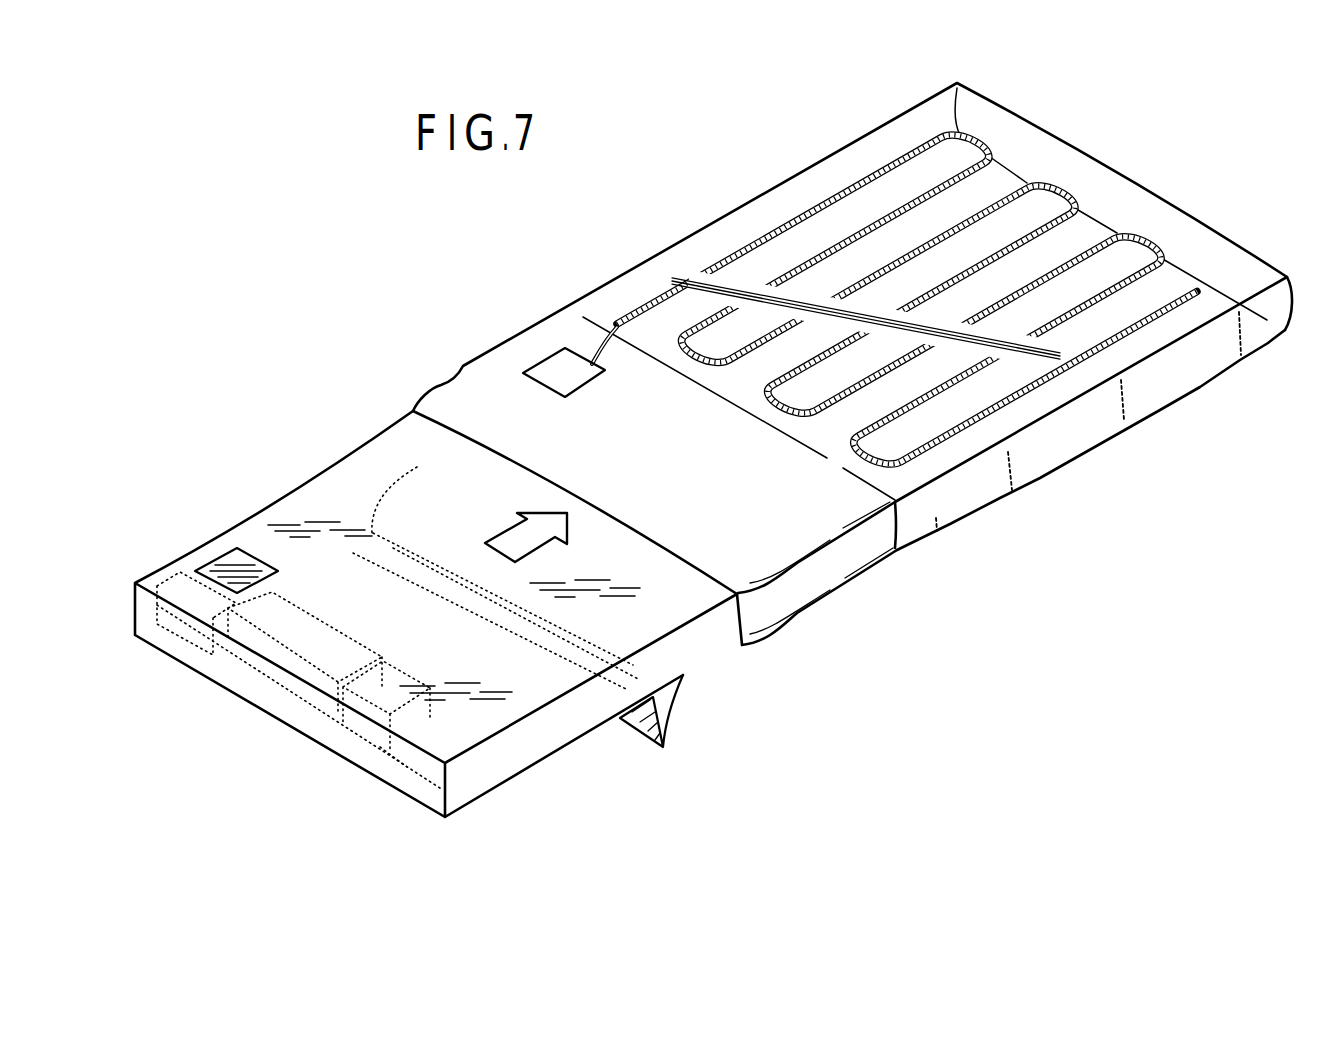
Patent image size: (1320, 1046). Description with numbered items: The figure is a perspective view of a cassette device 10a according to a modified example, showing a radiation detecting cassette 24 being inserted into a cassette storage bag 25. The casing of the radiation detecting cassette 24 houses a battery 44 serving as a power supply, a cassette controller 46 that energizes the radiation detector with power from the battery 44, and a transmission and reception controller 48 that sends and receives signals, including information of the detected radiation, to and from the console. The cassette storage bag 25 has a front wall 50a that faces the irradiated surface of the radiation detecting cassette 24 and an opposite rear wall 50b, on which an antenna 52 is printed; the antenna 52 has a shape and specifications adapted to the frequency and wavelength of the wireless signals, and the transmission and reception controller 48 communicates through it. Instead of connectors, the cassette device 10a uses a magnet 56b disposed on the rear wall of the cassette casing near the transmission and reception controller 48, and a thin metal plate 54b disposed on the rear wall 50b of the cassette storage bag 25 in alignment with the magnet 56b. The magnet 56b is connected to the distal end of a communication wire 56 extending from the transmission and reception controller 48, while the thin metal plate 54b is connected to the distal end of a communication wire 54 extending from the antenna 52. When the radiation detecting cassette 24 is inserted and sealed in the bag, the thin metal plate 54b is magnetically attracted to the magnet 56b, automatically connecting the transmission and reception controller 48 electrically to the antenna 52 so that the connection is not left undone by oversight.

The cassette device 10a is at (191, 432).
The radiation detecting cassette 24 is at (349, 441).
The cassette storage bag 25 is at (720, 206).
The battery 44 is at (379, 773).
The cassette controller 46 is at (263, 692).
The transmission and reception controller 48 is at (173, 660).
The front wall 50a is at (938, 525).
The rear wall 50b is at (1077, 158).
The antenna 52 is at (872, 223).
The communication wire 54 is at (608, 347).
The thin metal plate 54b is at (557, 382).
The communication wire 56 is at (173, 556).
The magnet 56b is at (238, 558).